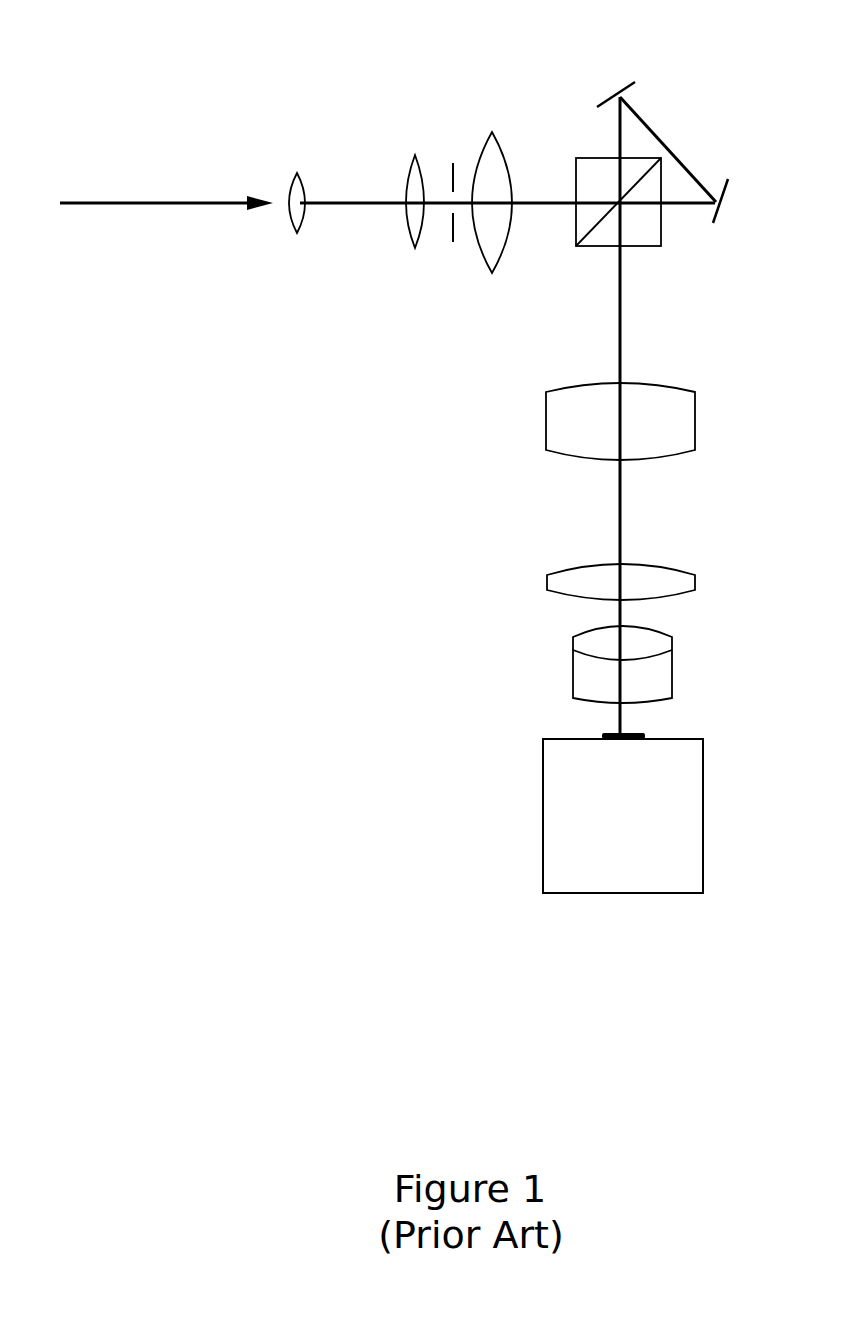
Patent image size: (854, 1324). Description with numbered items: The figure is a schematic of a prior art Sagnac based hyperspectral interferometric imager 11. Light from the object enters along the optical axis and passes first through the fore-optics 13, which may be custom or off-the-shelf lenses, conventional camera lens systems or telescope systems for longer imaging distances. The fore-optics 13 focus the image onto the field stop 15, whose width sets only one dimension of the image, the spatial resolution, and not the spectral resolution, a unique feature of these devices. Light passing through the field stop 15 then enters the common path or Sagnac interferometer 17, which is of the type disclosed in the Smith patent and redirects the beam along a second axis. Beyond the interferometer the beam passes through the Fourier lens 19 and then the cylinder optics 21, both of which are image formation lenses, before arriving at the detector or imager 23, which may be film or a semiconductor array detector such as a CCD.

The Sagnac based hyperspectral interferometric imager 11 is at (252, 588).
The fore-optics 13 is at (508, 127).
The field stop 15 is at (452, 242).
The common path or Sagnac interferometer 17 is at (677, 145).
The Fourier lens 19 is at (540, 412).
The cylinder optics 21 is at (523, 565).
The detector or imager 23 is at (532, 813).